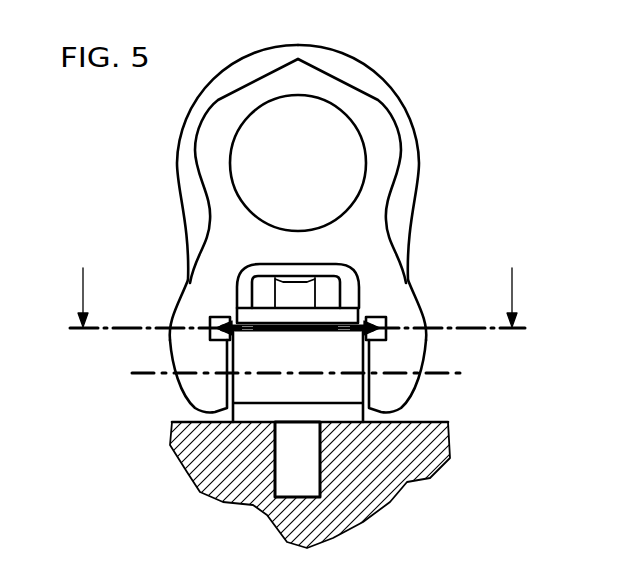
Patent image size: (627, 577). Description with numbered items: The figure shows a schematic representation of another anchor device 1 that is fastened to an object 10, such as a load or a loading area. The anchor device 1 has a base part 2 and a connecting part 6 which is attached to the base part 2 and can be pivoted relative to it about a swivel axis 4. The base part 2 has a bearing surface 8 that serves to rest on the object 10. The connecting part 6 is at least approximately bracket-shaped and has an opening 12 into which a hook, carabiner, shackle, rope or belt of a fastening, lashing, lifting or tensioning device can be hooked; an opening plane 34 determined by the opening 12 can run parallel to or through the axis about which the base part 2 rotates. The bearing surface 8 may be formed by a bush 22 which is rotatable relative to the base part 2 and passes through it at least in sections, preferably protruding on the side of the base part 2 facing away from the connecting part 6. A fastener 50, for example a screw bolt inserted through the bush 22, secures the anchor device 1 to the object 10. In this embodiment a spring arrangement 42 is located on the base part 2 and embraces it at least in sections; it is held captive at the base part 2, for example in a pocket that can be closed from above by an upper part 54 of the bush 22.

The anchor device 1 is at (313, 288).
The base part 2 is at (295, 338).
The swivel axis 4 is at (450, 373).
The connecting part 6 is at (308, 164).
The bearing surface 8 is at (347, 427).
The object 10 is at (313, 288).
The opening 12 is at (283, 153).
The bush 22 is at (358, 413).
The opening plane 34 is at (346, 196).
The spring arrangement 42 is at (232, 312).
The fastener 50 is at (292, 488).
The upper part of the bush 54 is at (335, 312).